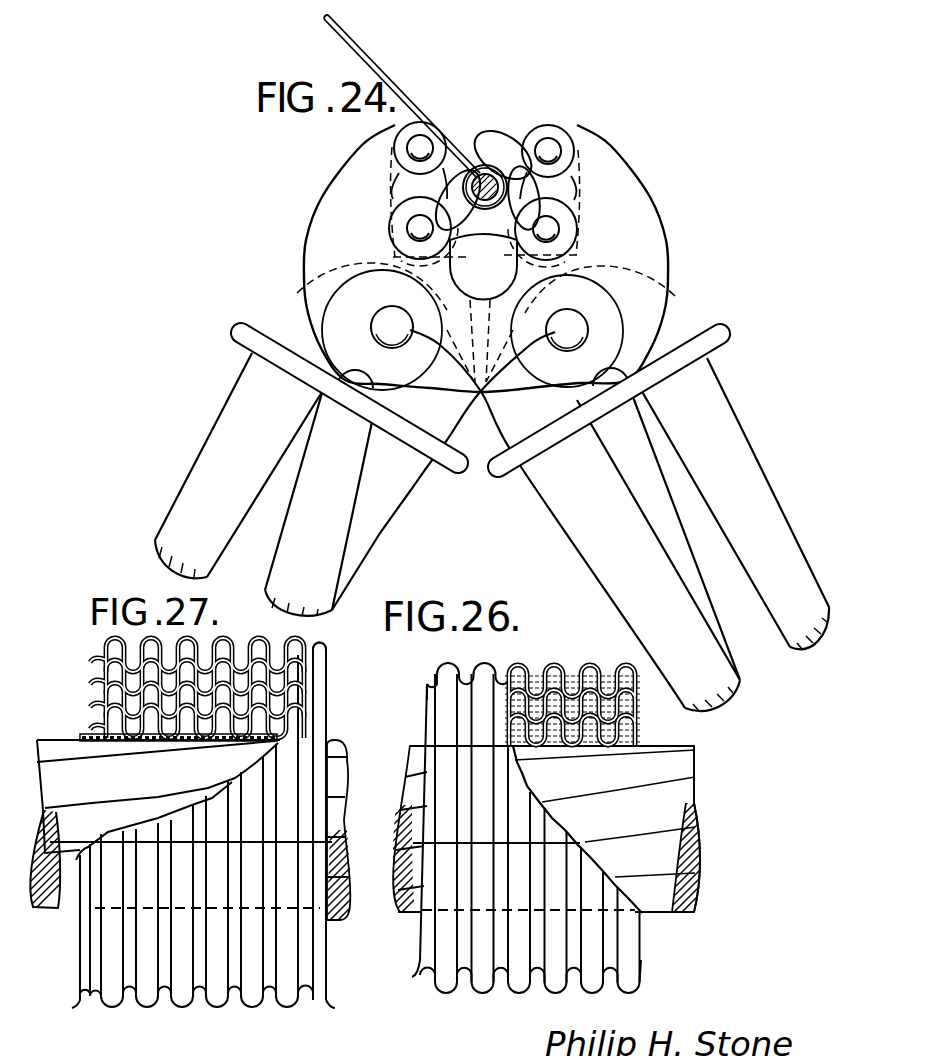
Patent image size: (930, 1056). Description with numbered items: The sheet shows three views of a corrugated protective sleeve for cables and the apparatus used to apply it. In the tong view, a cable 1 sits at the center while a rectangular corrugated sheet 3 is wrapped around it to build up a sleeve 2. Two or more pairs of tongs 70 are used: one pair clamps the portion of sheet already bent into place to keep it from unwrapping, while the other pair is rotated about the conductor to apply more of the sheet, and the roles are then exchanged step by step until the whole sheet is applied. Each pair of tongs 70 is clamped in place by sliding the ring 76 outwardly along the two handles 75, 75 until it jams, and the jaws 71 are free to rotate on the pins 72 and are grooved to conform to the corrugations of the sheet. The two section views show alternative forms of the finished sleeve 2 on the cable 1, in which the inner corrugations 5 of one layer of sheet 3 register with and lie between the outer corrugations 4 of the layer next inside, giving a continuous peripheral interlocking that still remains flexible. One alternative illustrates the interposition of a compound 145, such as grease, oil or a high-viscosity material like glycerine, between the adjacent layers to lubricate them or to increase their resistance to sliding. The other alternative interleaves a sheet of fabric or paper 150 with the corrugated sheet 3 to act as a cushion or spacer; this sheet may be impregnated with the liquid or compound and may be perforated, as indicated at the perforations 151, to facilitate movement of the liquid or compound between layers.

In FIG. 24, the cable 1 is at (497, 170).
In FIG. 27, the cable 1 is at (67, 892).
In FIG. 26, the cable 1 is at (668, 905).
In FIG. 24, the sleeve 2 is at (412, 170).
In FIG. 27, the sleeve 2 is at (327, 668).
In FIG. 26, the sleeve 2 is at (486, 663).
In FIG. 24, the corrugated sheet 3 is at (396, 72).
In FIG. 27, the corrugated sheet 3 is at (296, 787).
In FIG. 26, the corrugated sheet 3 is at (448, 775).
In FIG. 27, the outer corrugations 4 is at (112, 641).
In FIG. 26, the outer corrugations 4 is at (587, 665).
In FIG. 27, the inner corrugations 5 is at (303, 677).
In FIG. 26, the inner corrugations 5 is at (503, 697).
In FIG. 24, the tongs 70 is at (256, 393).
In FIG. 24, the jaws 71 is at (463, 152).
In FIG. 24, the pins 72 is at (407, 143).
In FIG. 24, the handles 75 is at (205, 462).
In FIG. 24, the ring 76 is at (248, 325).
In FIG. 26, the compound 145 is at (634, 738).
In FIG. 27, the sheet of fabric or paper 150 is at (90, 727).
In FIG. 27, the perforations 151 is at (285, 640).